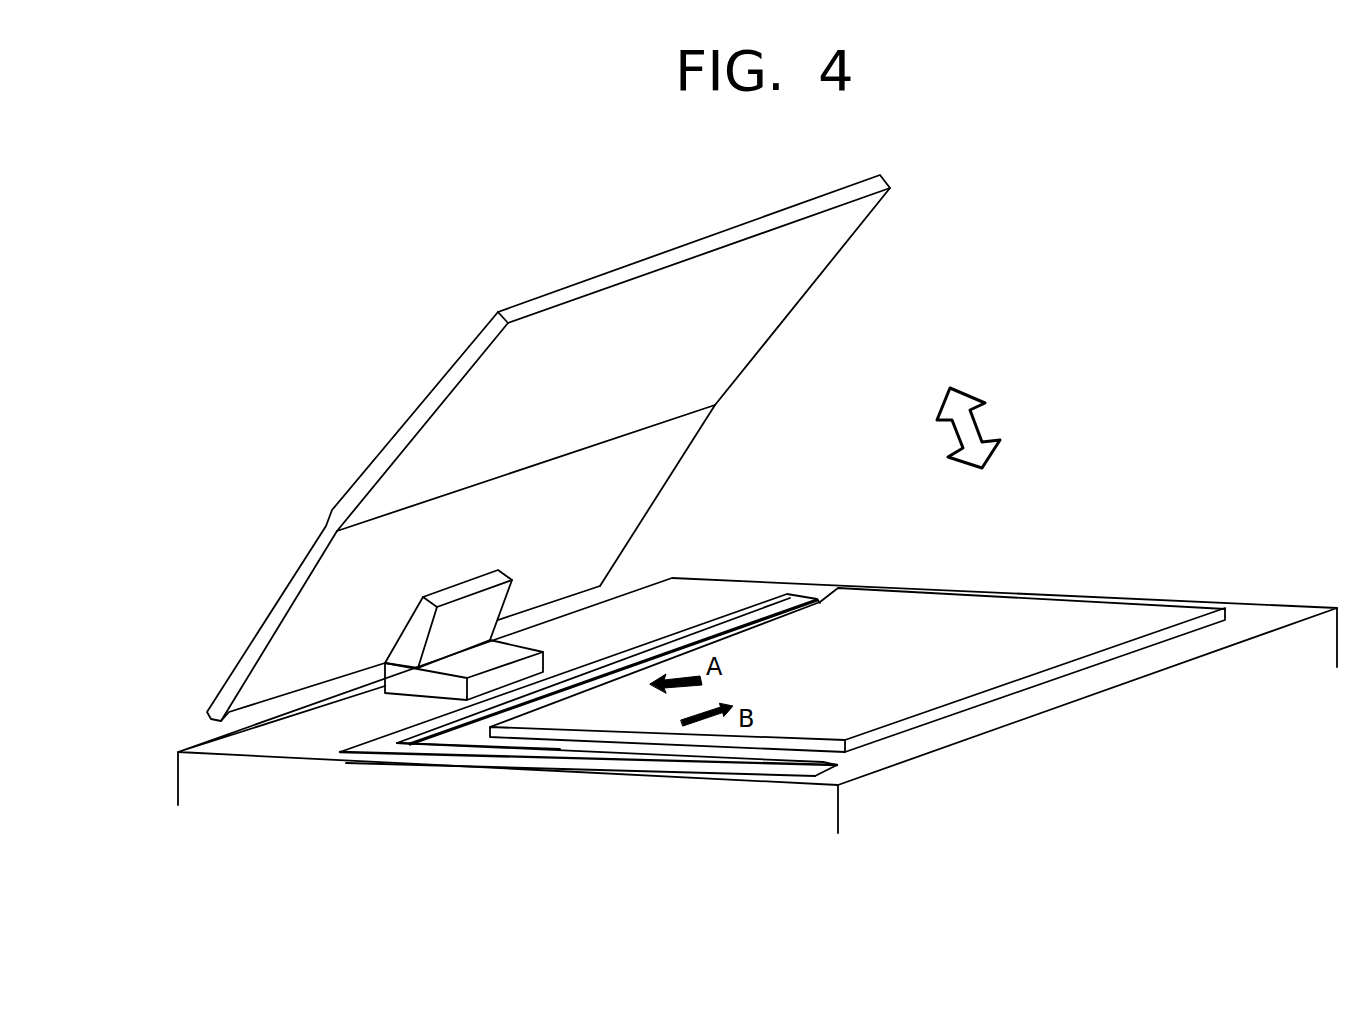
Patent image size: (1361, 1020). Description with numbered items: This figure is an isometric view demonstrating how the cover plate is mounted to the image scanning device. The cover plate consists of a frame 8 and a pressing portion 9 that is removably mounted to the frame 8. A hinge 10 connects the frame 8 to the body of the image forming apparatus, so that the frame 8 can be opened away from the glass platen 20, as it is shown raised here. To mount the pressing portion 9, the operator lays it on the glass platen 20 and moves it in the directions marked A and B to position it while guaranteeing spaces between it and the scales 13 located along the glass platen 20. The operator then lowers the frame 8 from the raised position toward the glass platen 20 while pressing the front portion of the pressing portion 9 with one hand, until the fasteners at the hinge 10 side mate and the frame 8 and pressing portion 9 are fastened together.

The frame 8 is at (463, 418).
The pressing portion 9 is at (990, 609).
The hinge 10 is at (407, 637).
The scales 13 is at (386, 752).
The glass platen 20 is at (477, 740).